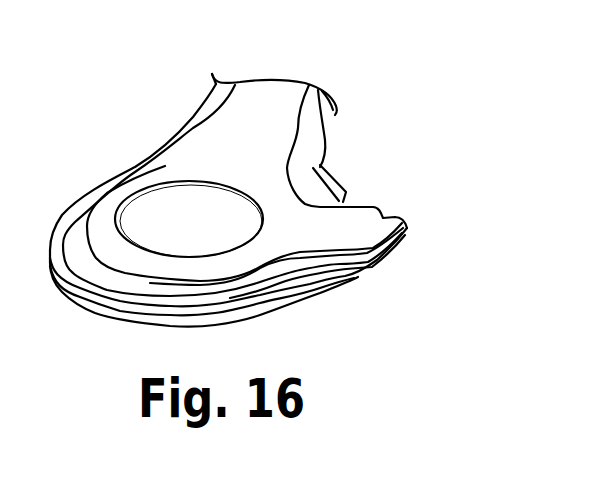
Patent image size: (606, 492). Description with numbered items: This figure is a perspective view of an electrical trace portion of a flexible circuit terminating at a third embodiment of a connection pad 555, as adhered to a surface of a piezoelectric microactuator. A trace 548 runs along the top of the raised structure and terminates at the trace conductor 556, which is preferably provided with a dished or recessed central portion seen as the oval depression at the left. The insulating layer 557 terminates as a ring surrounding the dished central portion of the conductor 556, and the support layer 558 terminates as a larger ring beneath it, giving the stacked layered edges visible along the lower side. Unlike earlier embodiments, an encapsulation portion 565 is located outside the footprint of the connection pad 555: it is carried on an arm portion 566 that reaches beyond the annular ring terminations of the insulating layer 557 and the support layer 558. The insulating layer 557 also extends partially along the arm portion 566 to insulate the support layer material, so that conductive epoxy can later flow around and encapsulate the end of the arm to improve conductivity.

The trace 548 is at (270, 96).
The connection pad 555 is at (162, 160).
The trace conductor 556 is at (285, 138).
The insulating layer 557 is at (310, 170).
The arm portion 566 is at (376, 227).
The encapsulation portion 565 is at (383, 251).
The support layer 558 is at (295, 289).